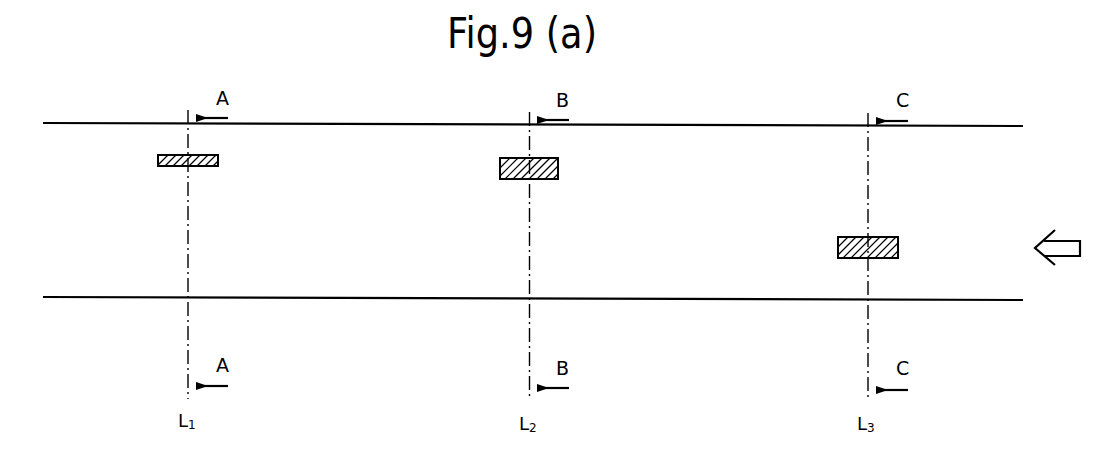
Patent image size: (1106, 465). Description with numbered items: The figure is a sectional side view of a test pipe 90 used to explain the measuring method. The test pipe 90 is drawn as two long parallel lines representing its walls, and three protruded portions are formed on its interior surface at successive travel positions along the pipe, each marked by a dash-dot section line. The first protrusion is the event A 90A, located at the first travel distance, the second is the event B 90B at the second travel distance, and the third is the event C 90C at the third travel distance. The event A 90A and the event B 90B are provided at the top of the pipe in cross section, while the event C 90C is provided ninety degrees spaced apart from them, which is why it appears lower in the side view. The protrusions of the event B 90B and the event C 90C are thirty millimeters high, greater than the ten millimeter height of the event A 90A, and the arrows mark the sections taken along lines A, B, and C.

The test pipe 90 is at (76, 121).
The event A 90A is at (218, 146).
The event B 90B is at (559, 148).
The event C 90C is at (898, 150).